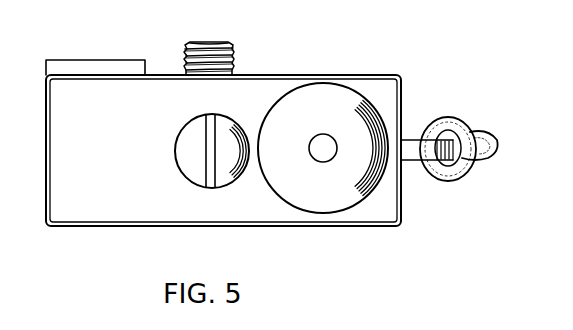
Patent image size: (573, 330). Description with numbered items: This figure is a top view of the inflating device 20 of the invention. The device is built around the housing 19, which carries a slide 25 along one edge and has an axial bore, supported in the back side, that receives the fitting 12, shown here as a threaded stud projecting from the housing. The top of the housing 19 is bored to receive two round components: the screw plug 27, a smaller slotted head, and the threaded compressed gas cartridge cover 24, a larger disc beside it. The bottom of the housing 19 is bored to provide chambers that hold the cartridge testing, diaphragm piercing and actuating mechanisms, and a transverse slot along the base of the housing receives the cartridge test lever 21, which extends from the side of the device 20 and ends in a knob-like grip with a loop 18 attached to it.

The fitting 12 is at (233, 47).
The loop 18 is at (482, 138).
The housing 19 is at (122, 228).
The inflating device 20 is at (315, 226).
The cartridge test lever 21 is at (437, 180).
The threaded compressed gas cartridge cover 24 is at (373, 110).
The slide 25 is at (93, 63).
The screw plug 27 is at (175, 152).